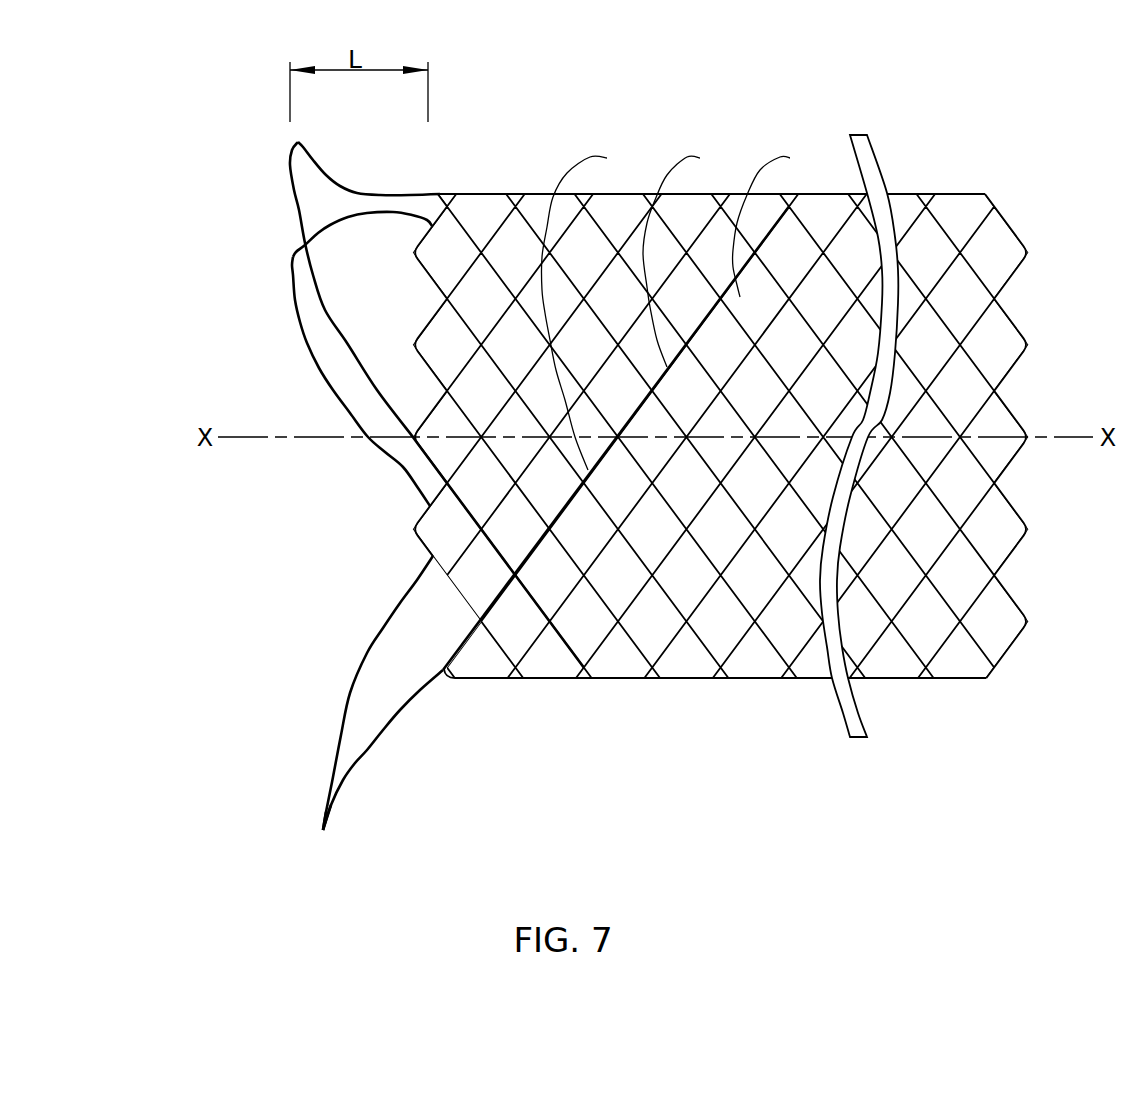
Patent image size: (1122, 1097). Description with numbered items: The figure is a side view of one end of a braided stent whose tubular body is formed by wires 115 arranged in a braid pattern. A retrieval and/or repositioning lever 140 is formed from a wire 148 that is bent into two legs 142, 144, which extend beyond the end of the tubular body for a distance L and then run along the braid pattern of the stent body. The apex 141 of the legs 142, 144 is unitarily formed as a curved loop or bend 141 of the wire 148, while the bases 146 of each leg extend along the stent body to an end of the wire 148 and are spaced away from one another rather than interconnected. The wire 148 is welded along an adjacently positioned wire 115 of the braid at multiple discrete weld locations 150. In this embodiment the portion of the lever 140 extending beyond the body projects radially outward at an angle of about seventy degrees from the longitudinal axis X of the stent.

The wires 115 is at (978, 273).
The retrieval and/or repositioning lever 140 is at (291, 157).
The apex 141 is at (322, 830).
The leg 142 is at (350, 689).
The leg 144 is at (410, 700).
The bases 146 is at (535, 543).
The wire 148 is at (367, 750).
The weld locations 150 is at (689, 307).